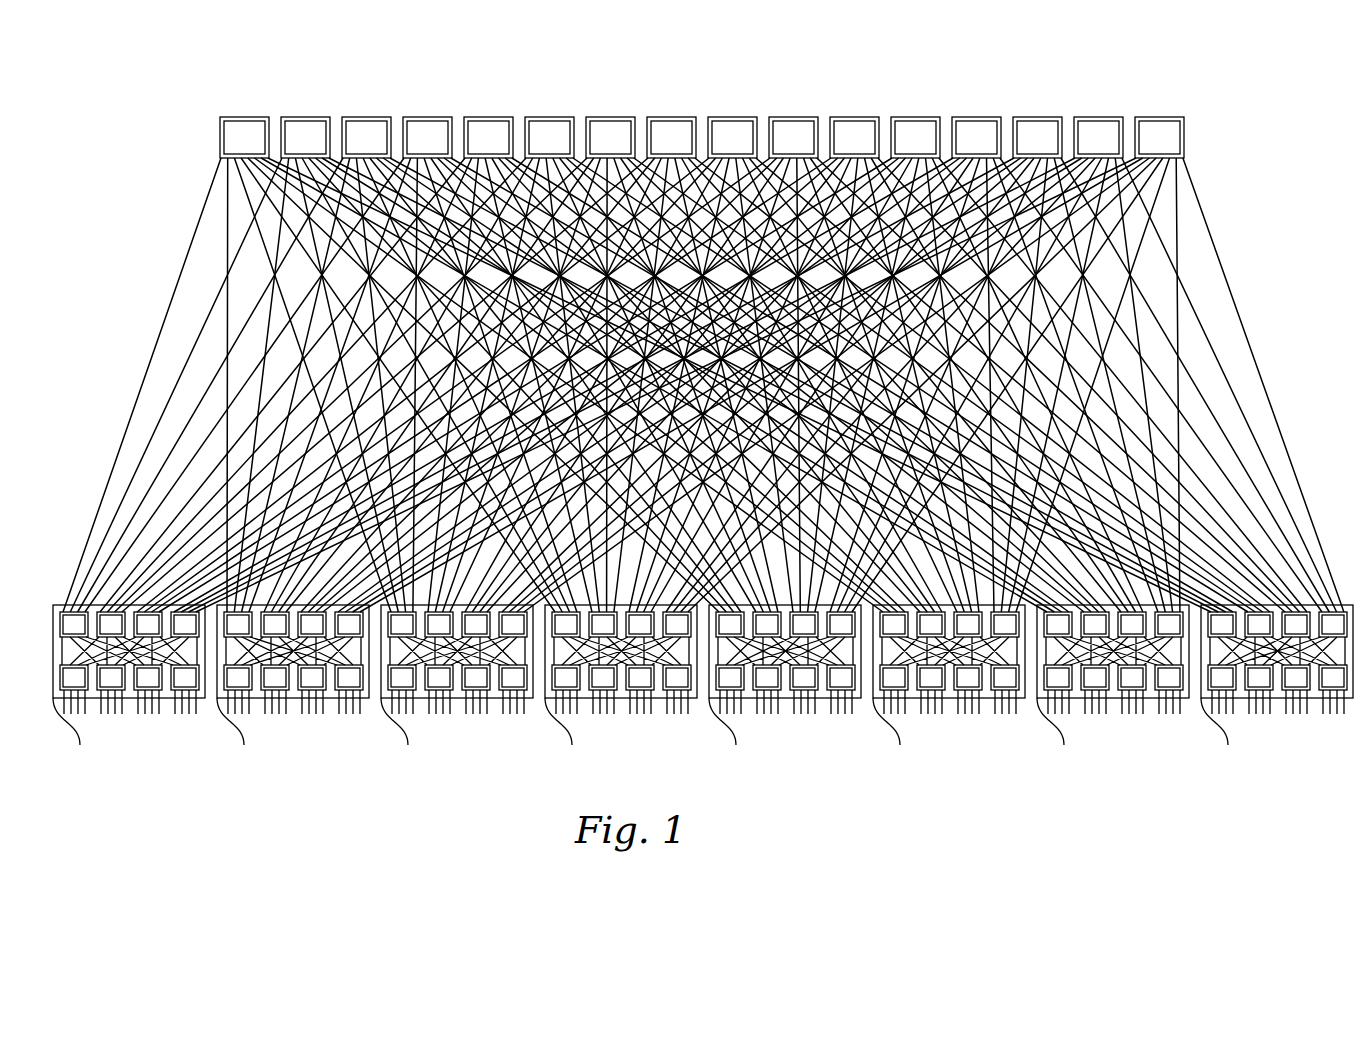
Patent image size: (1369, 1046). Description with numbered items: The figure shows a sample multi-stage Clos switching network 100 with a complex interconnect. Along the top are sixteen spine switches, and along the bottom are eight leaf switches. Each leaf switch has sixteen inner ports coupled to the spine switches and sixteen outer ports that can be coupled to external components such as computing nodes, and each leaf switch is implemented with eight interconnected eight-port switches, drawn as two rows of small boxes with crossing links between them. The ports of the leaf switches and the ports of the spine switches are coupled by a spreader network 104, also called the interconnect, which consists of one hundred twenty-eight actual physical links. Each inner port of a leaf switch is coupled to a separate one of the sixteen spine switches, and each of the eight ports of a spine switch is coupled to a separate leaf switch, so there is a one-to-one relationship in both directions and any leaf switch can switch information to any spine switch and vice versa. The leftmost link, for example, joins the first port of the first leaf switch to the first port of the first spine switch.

The network 100 is at (1222, 92).
The spreader network 104 is at (158, 277).